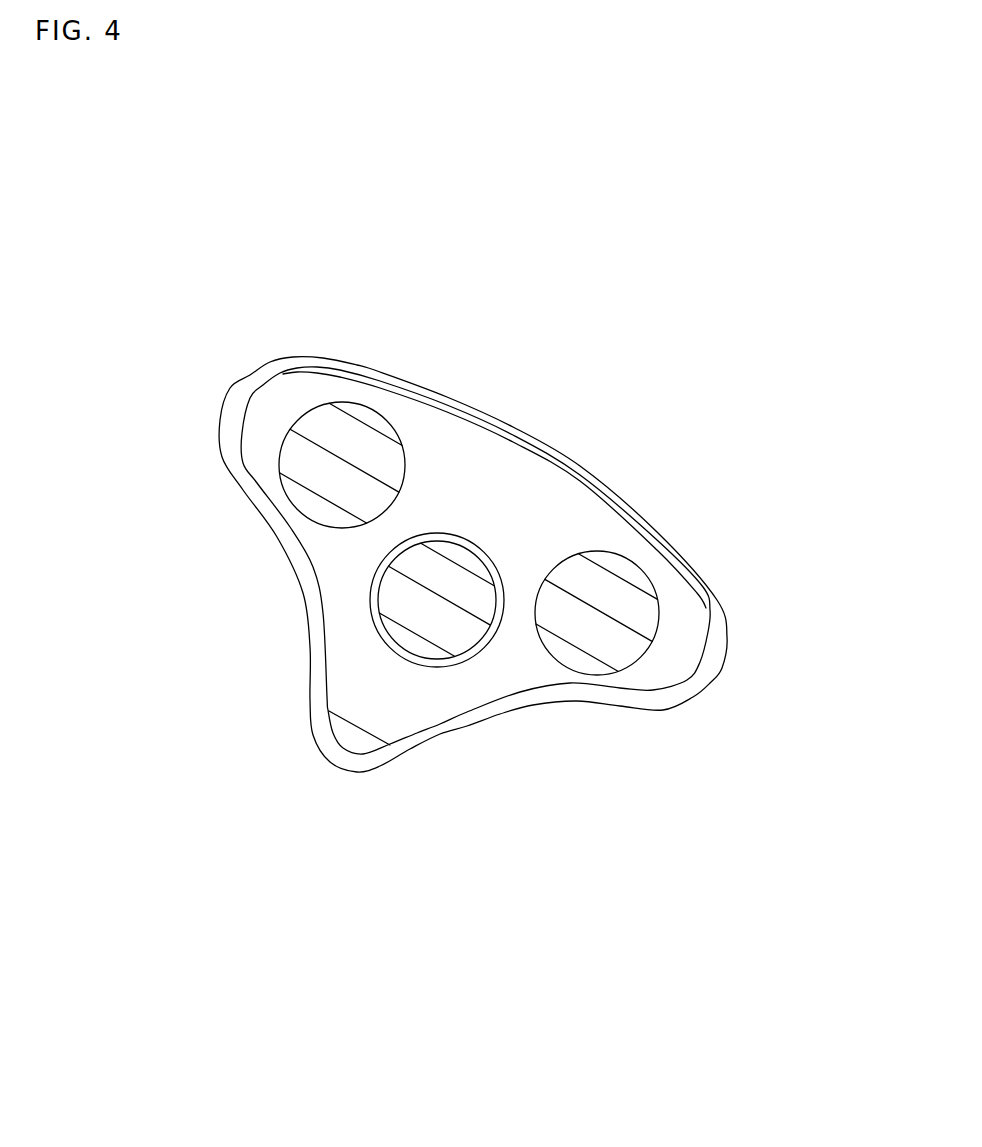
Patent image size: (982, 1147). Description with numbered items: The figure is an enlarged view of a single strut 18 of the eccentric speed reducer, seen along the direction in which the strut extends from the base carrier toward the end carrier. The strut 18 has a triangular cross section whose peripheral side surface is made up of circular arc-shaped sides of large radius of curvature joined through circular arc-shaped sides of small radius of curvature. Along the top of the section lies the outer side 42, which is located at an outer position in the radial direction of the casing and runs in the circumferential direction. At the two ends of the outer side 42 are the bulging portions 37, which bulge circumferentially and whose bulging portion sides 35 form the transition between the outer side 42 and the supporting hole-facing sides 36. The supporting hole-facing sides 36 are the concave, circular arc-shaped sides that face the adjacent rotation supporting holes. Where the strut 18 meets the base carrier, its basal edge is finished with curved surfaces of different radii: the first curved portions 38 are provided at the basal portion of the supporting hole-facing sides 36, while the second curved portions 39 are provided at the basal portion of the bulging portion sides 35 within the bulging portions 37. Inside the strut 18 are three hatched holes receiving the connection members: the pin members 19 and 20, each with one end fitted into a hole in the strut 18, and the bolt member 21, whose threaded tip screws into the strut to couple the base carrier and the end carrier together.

The strut 18 is at (650, 472).
The pin member 19 is at (607, 627).
The pin member 20 is at (340, 475).
The bolt member 21 is at (435, 575).
The bulging portion side 35 is at (257, 388).
The supporting hole-facing side 36 is at (303, 553).
The bulging portion 37 is at (278, 377).
The first curved portion 38 is at (303, 605).
The second curved portion 39 is at (228, 408).
The outer side 42 is at (532, 448).